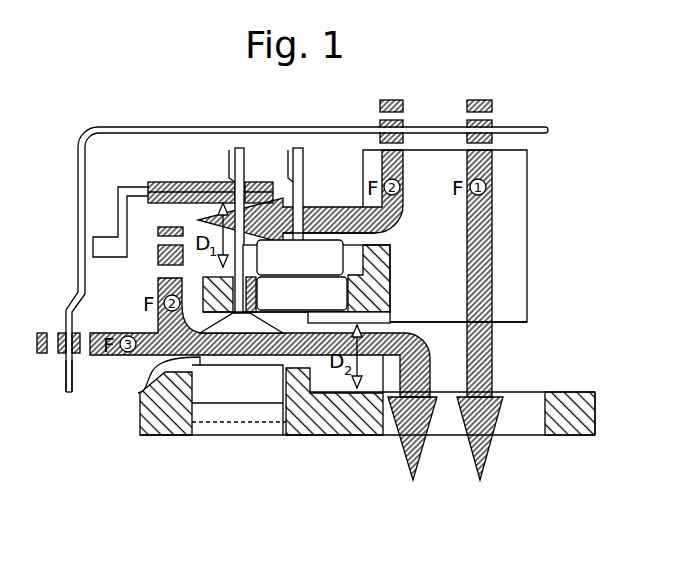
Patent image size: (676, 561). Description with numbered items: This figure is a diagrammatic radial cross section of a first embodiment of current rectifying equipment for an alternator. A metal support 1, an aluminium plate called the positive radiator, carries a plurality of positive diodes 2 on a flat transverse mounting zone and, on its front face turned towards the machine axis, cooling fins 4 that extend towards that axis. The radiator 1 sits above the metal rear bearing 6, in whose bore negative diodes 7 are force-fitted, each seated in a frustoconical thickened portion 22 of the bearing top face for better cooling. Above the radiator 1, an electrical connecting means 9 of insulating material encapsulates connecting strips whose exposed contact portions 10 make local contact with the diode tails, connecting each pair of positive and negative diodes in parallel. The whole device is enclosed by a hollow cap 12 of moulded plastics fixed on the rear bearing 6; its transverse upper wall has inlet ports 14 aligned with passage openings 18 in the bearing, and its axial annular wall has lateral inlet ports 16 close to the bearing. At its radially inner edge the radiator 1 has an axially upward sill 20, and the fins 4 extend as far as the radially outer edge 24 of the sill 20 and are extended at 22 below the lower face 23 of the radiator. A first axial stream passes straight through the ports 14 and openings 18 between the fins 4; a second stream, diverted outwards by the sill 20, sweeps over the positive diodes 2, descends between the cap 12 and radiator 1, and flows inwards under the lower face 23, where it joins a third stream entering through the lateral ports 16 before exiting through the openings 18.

The support 1 is at (401, 283).
The positive diodes 2 is at (326, 253).
The cooling fins 4 is at (527, 250).
The rear bearing 6 is at (373, 444).
The negative diodes 7 is at (138, 393).
The electrical connecting means 9 is at (157, 174).
The exposed contact portions 10 is at (255, 185).
The hollow cap 12 is at (70, 208).
The inlet ports 14 is at (415, 129).
The lateral inlet ports 16 is at (66, 365).
The passage openings 18 is at (457, 430).
The sill 20 is at (392, 257).
The frustoconical thickened portion 22 is at (408, 367).
The lower face 23 is at (433, 323).
The radially outer edge 24 is at (362, 237).